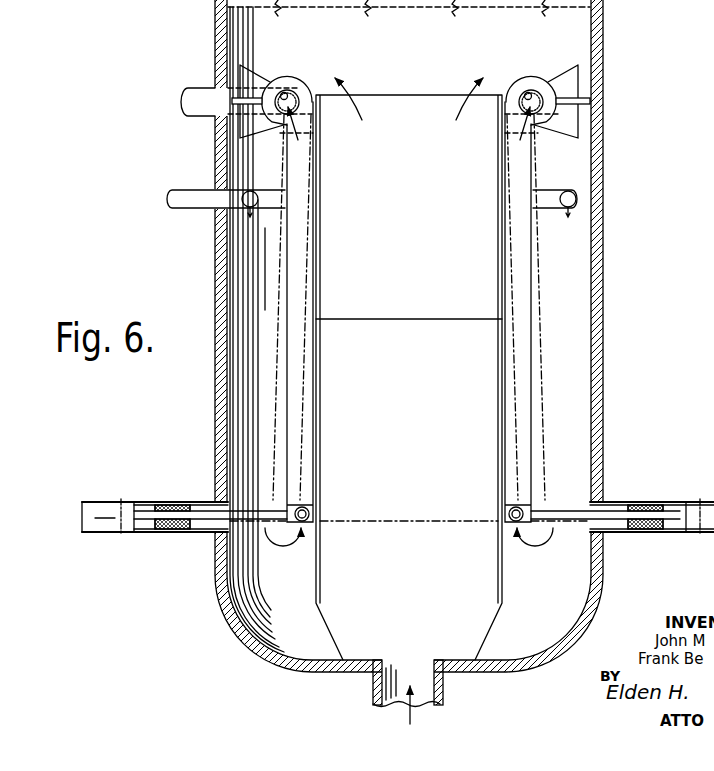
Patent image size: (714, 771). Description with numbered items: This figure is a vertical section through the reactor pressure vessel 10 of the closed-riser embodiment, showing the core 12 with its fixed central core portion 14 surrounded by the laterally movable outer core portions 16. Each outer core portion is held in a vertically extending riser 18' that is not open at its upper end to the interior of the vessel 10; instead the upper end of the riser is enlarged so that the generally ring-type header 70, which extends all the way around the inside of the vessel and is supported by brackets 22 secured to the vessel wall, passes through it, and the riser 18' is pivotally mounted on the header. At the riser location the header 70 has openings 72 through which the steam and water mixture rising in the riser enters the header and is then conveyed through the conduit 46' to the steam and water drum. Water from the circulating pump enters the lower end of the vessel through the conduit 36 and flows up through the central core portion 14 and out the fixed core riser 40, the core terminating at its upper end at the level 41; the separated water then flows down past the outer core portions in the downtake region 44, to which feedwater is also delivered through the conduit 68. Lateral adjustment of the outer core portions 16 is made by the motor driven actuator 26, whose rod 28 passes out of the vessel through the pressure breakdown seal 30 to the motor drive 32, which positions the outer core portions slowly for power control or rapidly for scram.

The reactor pressure vessel 10 is at (605, 262).
The core 12 is at (572, 238).
The fixed central core portion 14 is at (463, 352).
The outer laterally movable core portion 16 is at (290, 373).
The riser 18' is at (411, 299).
The bracket 22 is at (268, 68).
The motor driven actuator 26 is at (157, 541).
The rod 28 is at (206, 509).
The pressure breakdown seal 30 is at (165, 503).
The motor drive 32 is at (103, 500).
The conduit 36 is at (443, 690).
The fixed core riser 40 is at (322, 176).
The level 41 is at (430, 318).
The downtake region 44 is at (235, 288).
The conduit 46' is at (361, 79).
The conduit 68 is at (185, 190).
The ring-type header 70 is at (289, 96).
The opening 72 is at (313, 121).